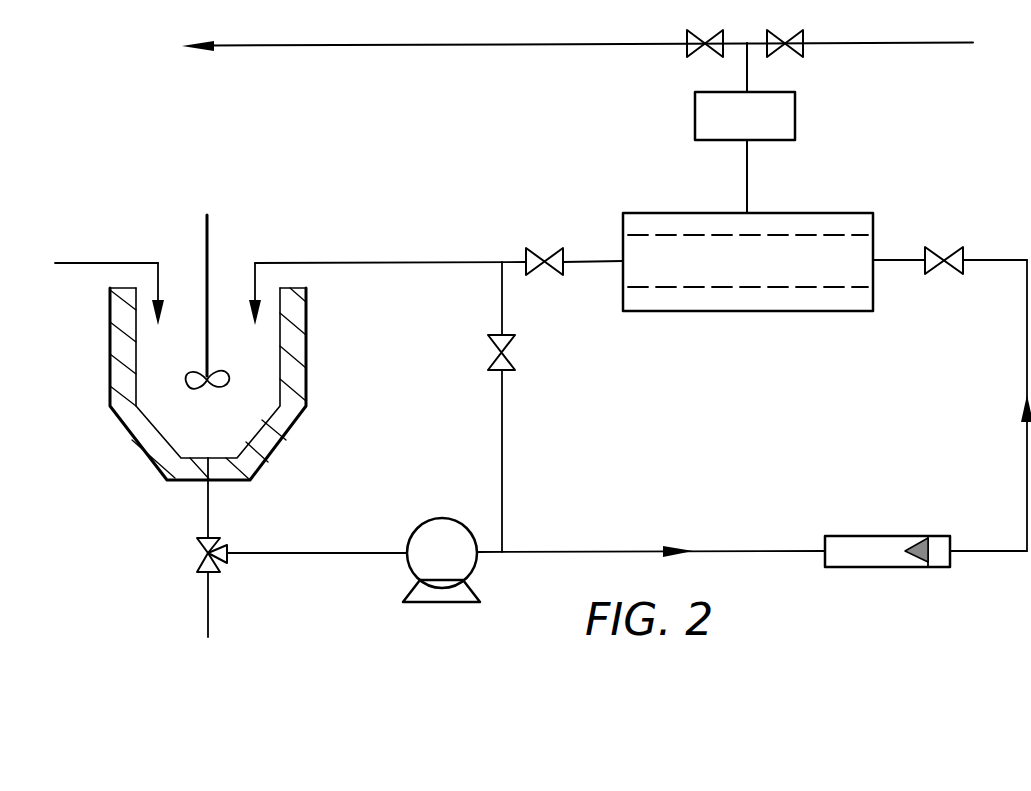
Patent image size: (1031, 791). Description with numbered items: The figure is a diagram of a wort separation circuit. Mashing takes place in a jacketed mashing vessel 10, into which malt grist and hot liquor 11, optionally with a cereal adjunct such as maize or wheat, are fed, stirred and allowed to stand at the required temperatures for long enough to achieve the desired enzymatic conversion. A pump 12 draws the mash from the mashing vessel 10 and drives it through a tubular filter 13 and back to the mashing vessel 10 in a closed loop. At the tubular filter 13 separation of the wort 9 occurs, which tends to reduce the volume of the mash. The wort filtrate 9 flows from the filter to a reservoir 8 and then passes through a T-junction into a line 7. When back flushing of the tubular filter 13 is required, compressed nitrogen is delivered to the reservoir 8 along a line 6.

The line 6 is at (858, 43).
The line 7 is at (620, 45).
The reservoir 8 is at (777, 117).
The wort filtrate 9 is at (746, 183).
The jacketed mashing vessel 10 is at (300, 393).
The malt grist and hot liquor 11 is at (110, 263).
The pump 12 is at (430, 540).
The tubular filter 13 is at (748, 322).